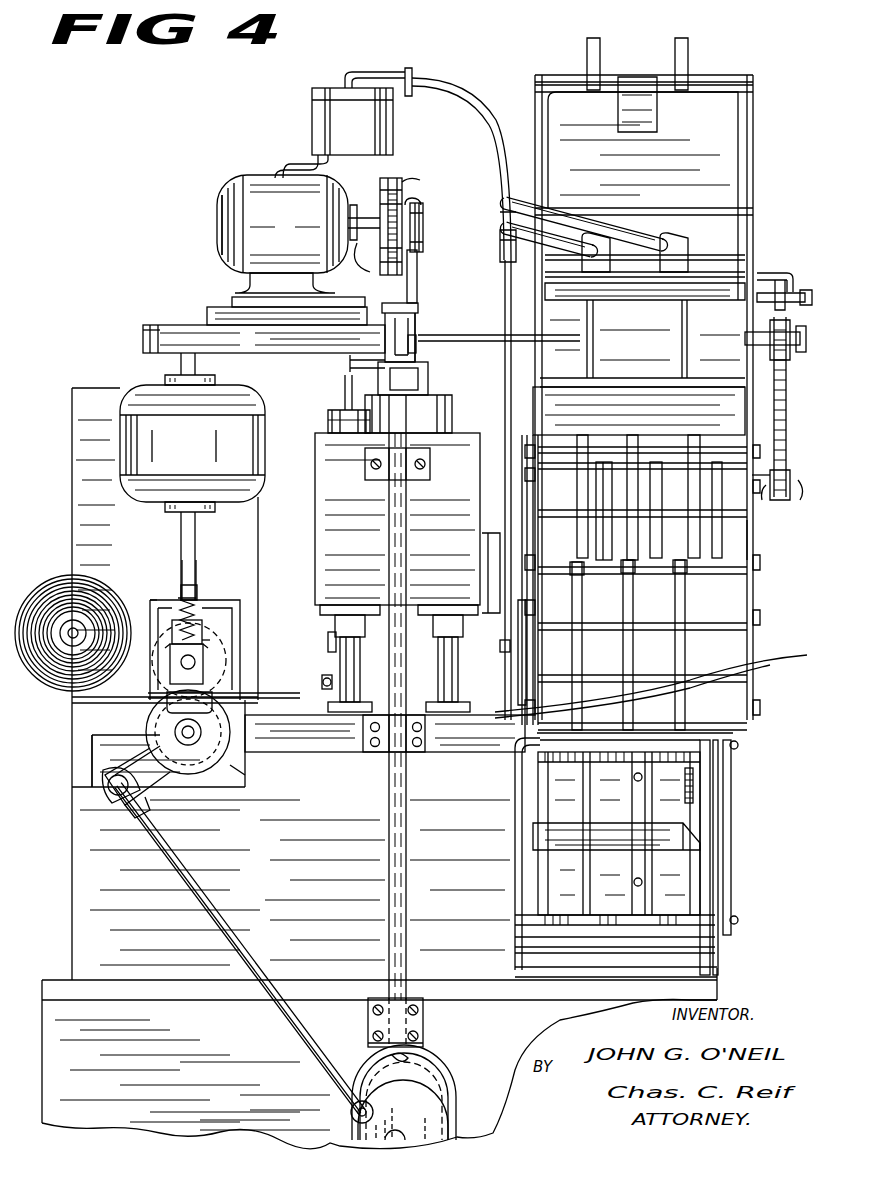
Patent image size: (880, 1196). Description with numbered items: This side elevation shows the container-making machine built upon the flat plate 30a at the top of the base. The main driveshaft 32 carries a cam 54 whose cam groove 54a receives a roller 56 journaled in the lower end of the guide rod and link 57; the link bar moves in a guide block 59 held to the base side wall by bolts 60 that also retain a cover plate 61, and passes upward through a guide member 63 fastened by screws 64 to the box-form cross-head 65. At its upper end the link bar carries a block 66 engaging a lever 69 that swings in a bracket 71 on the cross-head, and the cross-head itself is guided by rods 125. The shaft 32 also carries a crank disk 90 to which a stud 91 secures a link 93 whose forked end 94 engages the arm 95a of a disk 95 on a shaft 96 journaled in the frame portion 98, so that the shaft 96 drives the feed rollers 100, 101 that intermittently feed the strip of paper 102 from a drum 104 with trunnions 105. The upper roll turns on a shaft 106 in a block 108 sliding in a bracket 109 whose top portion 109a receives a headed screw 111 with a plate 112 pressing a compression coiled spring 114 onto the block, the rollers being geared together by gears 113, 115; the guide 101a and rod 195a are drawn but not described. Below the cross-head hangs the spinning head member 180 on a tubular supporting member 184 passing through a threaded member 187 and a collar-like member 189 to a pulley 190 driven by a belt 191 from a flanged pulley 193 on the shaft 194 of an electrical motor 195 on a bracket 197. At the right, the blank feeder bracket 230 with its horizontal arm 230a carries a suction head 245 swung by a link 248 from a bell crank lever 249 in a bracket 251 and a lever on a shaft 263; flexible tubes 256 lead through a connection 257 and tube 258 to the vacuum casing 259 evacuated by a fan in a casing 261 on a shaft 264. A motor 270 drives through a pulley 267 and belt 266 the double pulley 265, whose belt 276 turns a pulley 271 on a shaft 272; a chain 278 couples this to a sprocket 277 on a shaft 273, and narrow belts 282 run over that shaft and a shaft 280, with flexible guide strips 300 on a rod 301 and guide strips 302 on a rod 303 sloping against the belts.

The flat plate 30a is at (60, 982).
The main driveshaft 32 is at (400, 1138).
The cam 54 is at (430, 1095).
The cam groove 54a is at (440, 1112).
The roller 56 is at (410, 1068).
The guide rod and link 57 is at (407, 534).
The guide block 59 is at (404, 752).
The bolts 60 is at (424, 1044).
The cover plate 61 is at (414, 1016).
The guide member 63 is at (430, 468).
The screws 64 is at (372, 474).
The cross-head 65 is at (325, 511).
The block 66 is at (420, 382).
The lever 69 is at (420, 356).
The bracket 71 is at (386, 336).
The crank disk 90 is at (350, 1118).
The stud 91 is at (380, 1114).
The link 93 is at (308, 1050).
The forked end 94 is at (113, 803).
The disk 95 is at (215, 770).
The arm 95a is at (150, 790).
The shaft 96 is at (195, 728).
The frame portion 98 is at (90, 718).
The feed roller 100 is at (160, 724).
The feed roller 101 is at (208, 665).
The block guide 101a is at (220, 640).
The strip of paper 102 is at (100, 700).
The drum 104 is at (50, 588).
The trunnions 105 is at (80, 625).
The shaft 106 is at (200, 620).
The block 108 is at (166, 604).
The bracket 109 is at (158, 693).
The top portion 109a is at (212, 625).
The headed screws 111 is at (198, 590).
The plate 112 is at (179, 592).
The gear 113 is at (240, 770).
The compression coiled springs 114 is at (212, 630).
The gear 115 is at (245, 589).
The rods 125 is at (340, 660).
The spinning head member 180 is at (322, 686).
The tubular supporting member 184 is at (330, 398).
The threaded member 187 is at (330, 636).
The collar-like member 189 is at (344, 405).
The pulley 190 is at (350, 364).
The belt 191 is at (292, 340).
The flanged pulley 193 is at (146, 327).
The shaft 194 is at (146, 326).
The electrical motor 195 is at (250, 400).
The piston rod 195a is at (196, 362).
The bracket 197 is at (80, 493).
The bracket 230 is at (750, 538).
The horizontal arm 230a is at (214, 318).
The suction head 245 is at (692, 268).
The link 248 is at (505, 404).
The bell crank lever 249 is at (500, 645).
The bracket 251 is at (518, 678).
The flexible tubes 256 is at (590, 250).
The connection 257 is at (500, 203).
The tube 258 is at (470, 88).
The casing 259 is at (318, 112).
The fan casing 261 is at (360, 185).
The shaft 263 is at (762, 290).
The shaft 264 is at (355, 214).
The double pulley 265 is at (425, 228).
The belt 266 is at (412, 180).
The pulley 267 is at (404, 192).
The motor 270 is at (224, 215).
The pulley 271 is at (428, 328).
The shaft 272 is at (470, 330).
The shaft 273 is at (760, 490).
The belt 276 is at (419, 279).
The sprocket 277 is at (768, 445).
The chain 278 is at (776, 486).
The shaft 280 is at (730, 720).
The narrow belts 282 is at (585, 535).
The flexible guide strips 300 is at (660, 428).
The rod 301 is at (598, 440).
The guide strips 302 is at (630, 660).
The rod 303 is at (634, 580).